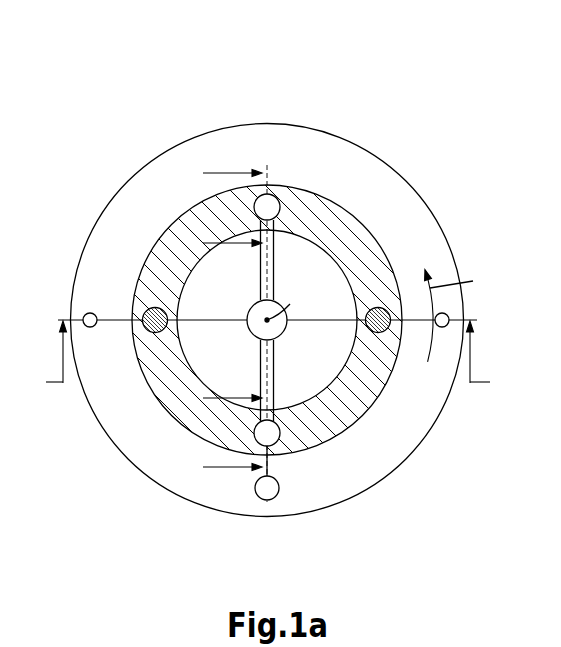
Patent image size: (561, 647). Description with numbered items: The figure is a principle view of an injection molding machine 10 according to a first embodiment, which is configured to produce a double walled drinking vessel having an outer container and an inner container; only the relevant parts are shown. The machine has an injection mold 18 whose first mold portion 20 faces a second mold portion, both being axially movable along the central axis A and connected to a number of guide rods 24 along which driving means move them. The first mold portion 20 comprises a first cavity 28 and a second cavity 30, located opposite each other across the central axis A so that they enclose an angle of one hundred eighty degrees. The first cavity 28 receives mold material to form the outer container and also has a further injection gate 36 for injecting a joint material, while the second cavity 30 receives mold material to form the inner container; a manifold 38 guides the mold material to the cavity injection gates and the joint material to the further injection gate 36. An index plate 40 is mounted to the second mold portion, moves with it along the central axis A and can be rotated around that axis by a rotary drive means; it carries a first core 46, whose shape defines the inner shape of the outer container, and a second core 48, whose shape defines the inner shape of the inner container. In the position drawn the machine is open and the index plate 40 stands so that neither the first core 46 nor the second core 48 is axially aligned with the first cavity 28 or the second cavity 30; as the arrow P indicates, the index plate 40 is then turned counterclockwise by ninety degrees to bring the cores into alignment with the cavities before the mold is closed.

The injection molding machine 10 is at (112, 64).
The injection mold 18 is at (267, 308).
The first mold portion 20 is at (384, 163).
The guide rods 24 is at (88, 328).
The first cavity 28 is at (272, 432).
The second cavity 30 is at (272, 200).
The further injection gate 36 is at (268, 458).
The manifold 38 is at (274, 364).
The index plate 40 is at (167, 265).
The first core 46 is at (153, 333).
The second core 48 is at (380, 307).